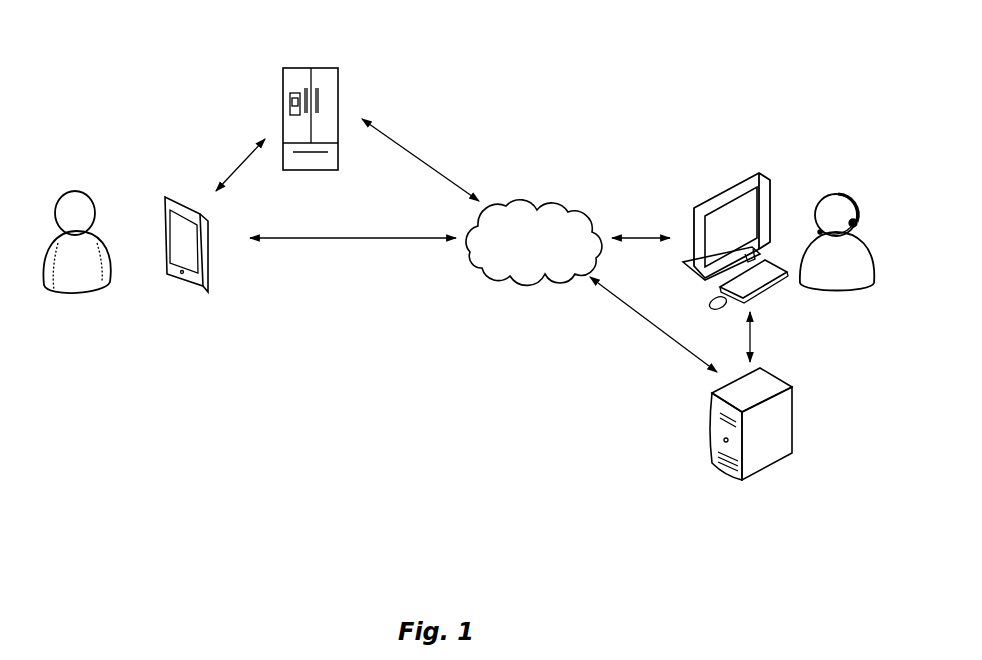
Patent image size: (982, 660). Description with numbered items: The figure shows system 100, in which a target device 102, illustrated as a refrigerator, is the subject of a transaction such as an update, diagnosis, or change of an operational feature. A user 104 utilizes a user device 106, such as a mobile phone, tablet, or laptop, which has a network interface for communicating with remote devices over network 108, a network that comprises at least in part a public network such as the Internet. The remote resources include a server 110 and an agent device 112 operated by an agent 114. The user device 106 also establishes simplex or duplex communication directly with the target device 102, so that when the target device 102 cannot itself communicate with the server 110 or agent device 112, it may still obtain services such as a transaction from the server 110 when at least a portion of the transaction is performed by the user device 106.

The system 100 is at (770, 51).
The target device 102 is at (338, 83).
The user 104 is at (102, 283).
The user device 106 is at (214, 265).
The network 108 is at (550, 206).
The server 110 is at (792, 406).
The agent device 112 is at (762, 185).
The agent 114 is at (870, 248).